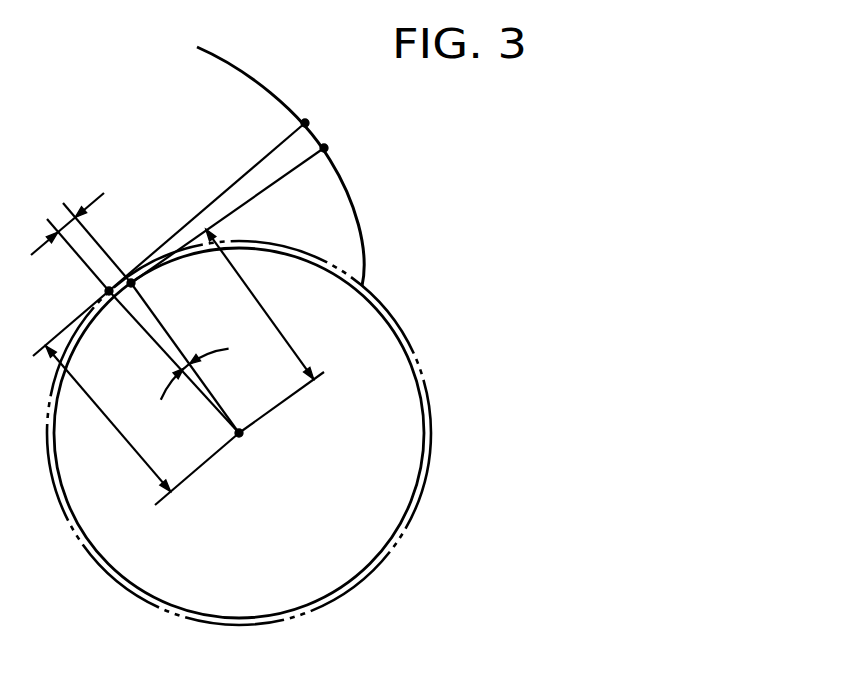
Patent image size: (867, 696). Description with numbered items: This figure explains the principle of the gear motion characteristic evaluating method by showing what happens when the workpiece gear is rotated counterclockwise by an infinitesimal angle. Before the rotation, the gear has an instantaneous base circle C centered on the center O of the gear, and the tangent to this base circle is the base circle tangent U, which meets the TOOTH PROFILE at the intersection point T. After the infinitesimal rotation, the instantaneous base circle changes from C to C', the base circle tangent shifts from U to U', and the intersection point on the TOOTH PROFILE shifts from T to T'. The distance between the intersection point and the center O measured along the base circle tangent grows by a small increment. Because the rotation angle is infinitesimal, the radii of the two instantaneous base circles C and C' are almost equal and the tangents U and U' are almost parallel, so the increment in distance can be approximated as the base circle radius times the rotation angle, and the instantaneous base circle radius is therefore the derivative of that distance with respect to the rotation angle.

The tooth profile TOOTH PROFILE is at (364, 229).
The instantaneous base circle C is at (239, 433).
The instantaneous base circle C' is at (272, 433).
The center of the gear O is at (252, 445).
The base circle tangent U is at (225, 217).
The base circle tangent U' is at (169, 239).
The intersection point T is at (339, 144).
The intersection point T' is at (316, 105).